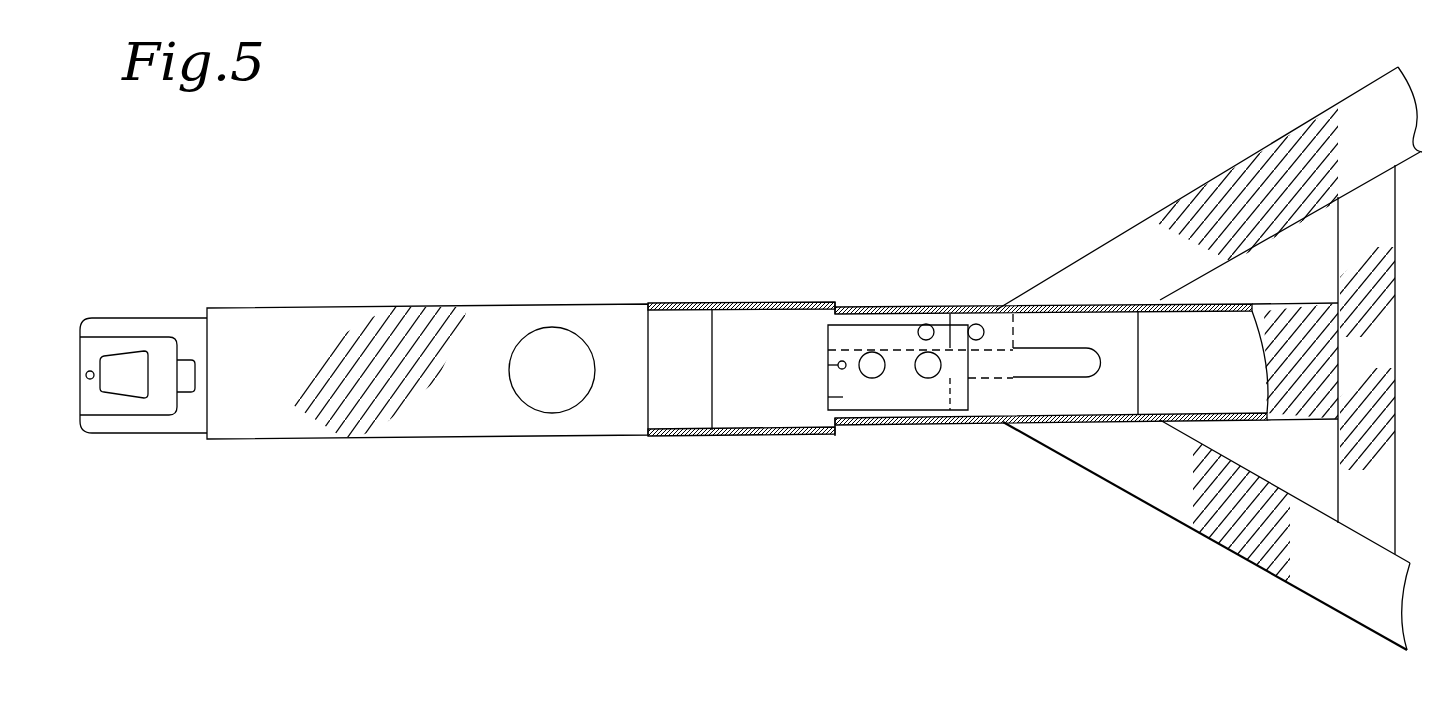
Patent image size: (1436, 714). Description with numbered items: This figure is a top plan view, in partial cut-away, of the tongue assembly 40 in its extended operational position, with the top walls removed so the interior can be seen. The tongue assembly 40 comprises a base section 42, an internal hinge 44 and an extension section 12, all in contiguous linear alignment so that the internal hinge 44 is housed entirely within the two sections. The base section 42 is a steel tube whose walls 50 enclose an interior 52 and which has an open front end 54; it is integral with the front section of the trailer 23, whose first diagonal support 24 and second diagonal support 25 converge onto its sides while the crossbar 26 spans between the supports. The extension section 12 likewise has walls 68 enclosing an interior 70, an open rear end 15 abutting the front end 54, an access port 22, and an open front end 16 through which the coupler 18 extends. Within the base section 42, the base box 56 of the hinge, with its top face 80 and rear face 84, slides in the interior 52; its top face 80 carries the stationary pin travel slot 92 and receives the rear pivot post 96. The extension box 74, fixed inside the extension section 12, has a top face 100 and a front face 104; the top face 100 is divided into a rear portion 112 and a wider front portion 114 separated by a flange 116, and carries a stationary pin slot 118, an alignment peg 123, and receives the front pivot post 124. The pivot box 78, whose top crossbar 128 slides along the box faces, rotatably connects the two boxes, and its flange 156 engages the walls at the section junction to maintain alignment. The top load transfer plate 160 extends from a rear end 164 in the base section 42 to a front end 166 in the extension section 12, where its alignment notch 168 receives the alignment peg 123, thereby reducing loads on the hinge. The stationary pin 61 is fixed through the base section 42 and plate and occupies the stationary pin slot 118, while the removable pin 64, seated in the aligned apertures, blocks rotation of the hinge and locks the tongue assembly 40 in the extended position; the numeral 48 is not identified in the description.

The extension section 12 is at (327, 440).
The rear end 15 is at (830, 293).
The front end 16 is at (270, 323).
The coupler 18 is at (153, 423).
The access port 22 is at (543, 343).
The front section of the trailer 23 is at (1373, 227).
The first diagonal support 24 is at (1347, 605).
The second diagonal support 25 is at (1177, 228).
The crossbar 26 is at (1356, 262).
The tongue assembly 40 is at (745, 150).
The base section 42 is at (988, 424).
The internal hinge 44 is at (934, 261).
The wall block 48 is at (1323, 407).
The walls 50 is at (977, 424).
The interior 52 is at (1215, 340).
The front end 54 is at (858, 427).
The base box 56 is at (1102, 405).
The stationary pin 61 is at (948, 410).
The removable pin 64 is at (872, 378).
The walls 68 is at (578, 437).
The interior 70 is at (682, 347).
The extension box 74 is at (745, 402).
The pivot box 78 is at (892, 335).
The top face 80 is at (1083, 328).
The rear face 84 is at (1143, 370).
The stationary pin travel slot 92 is at (1058, 360).
The rear pivot post 96 is at (977, 324).
The top face 100 is at (706, 398).
The front face 104 is at (705, 398).
The rear portion 112 is at (928, 378).
The front portion 114 is at (728, 310).
The flange 116 is at (837, 433).
The stationary pin slot 118 is at (968, 410).
The alignment peg 123 is at (838, 362).
The front pivot post 124 is at (926, 322).
The top crossbar 128 is at (1000, 320).
The flange 156 is at (847, 308).
The top load transfer plate 160 is at (735, 322).
The rear end 164 is at (1016, 424).
The front end 166 is at (828, 397).
The alignment notch 168 is at (840, 366).